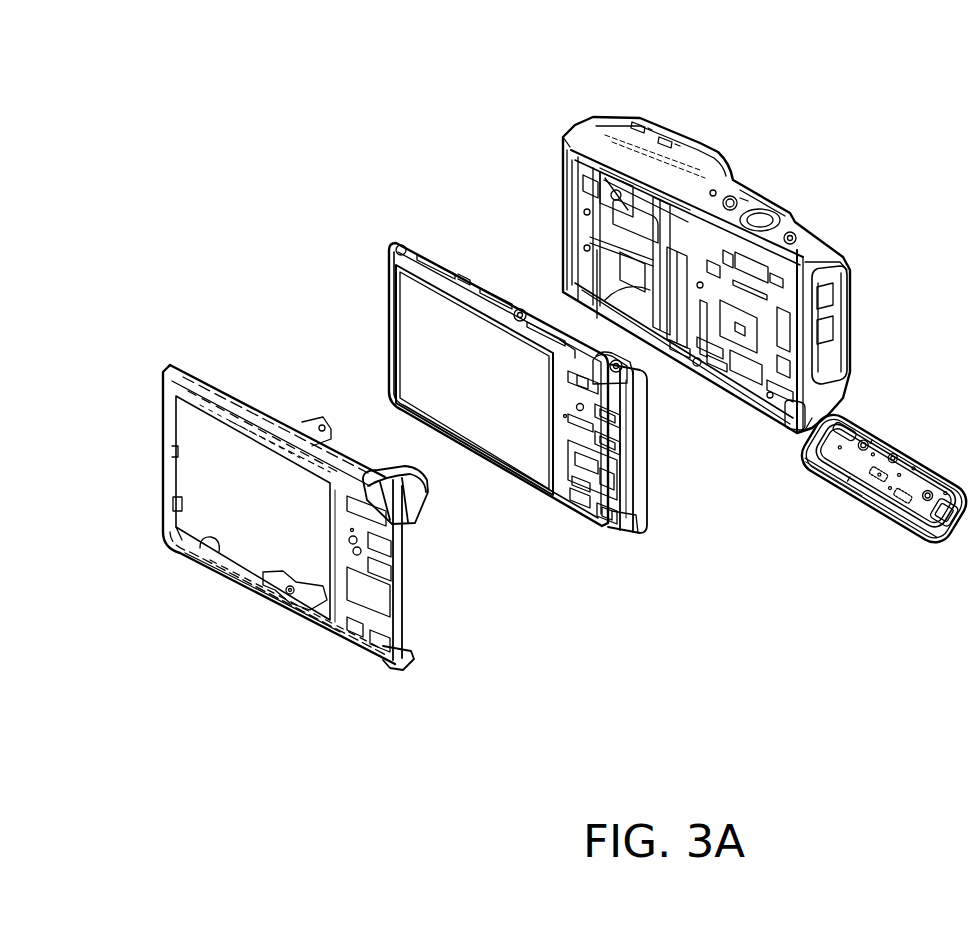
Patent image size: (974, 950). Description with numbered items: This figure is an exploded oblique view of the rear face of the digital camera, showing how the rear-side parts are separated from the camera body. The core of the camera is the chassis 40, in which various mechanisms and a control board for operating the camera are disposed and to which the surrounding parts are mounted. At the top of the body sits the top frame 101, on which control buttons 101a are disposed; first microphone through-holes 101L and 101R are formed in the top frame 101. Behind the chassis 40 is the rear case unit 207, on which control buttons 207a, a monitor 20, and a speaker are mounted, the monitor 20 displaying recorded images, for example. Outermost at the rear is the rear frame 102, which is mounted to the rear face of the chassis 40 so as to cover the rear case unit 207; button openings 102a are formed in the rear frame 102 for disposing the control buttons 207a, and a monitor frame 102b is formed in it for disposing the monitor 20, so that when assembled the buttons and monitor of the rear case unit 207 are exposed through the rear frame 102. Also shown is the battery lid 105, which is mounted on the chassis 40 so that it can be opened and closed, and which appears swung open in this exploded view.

The top frame 101 is at (694, 167).
The first microphone through-hole 101L is at (643, 118).
The first microphone through-hole 101R is at (671, 147).
The control buttons 101a is at (778, 197).
The chassis 40 is at (563, 200).
The monitor 20 is at (483, 423).
The rear case unit 207 is at (633, 559).
The control buttons 207a is at (566, 518).
The battery lid 105 is at (880, 514).
The rear frame 102 is at (399, 679).
The button openings 102a is at (345, 656).
The monitor frame 102b is at (217, 538).